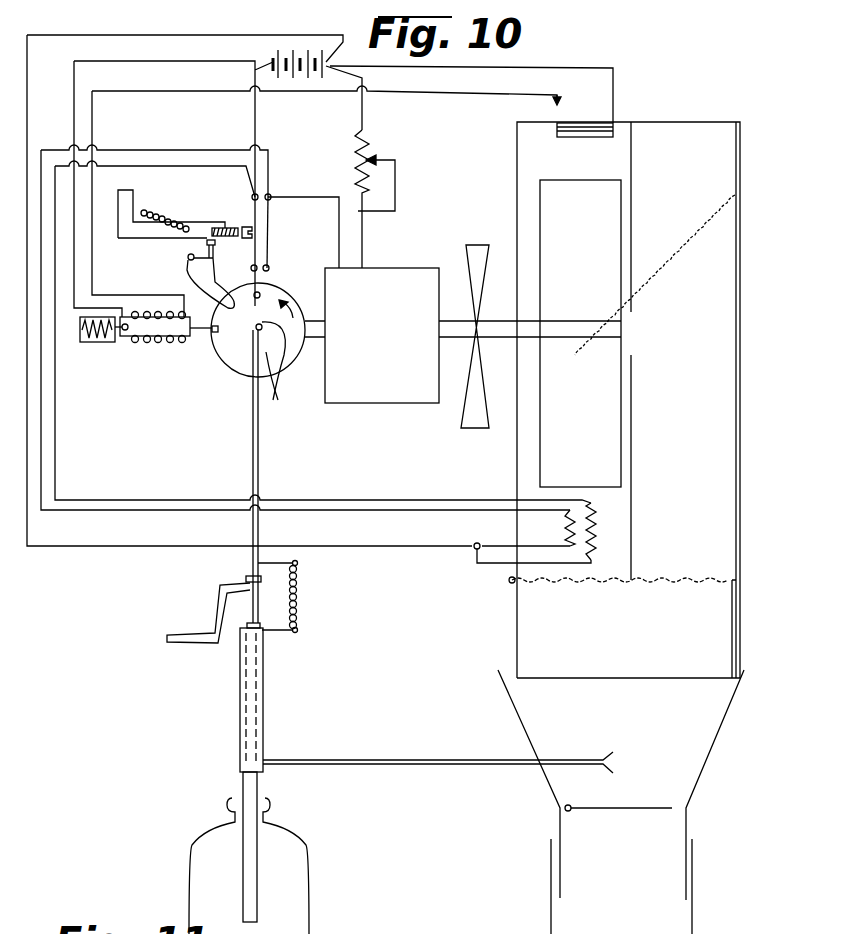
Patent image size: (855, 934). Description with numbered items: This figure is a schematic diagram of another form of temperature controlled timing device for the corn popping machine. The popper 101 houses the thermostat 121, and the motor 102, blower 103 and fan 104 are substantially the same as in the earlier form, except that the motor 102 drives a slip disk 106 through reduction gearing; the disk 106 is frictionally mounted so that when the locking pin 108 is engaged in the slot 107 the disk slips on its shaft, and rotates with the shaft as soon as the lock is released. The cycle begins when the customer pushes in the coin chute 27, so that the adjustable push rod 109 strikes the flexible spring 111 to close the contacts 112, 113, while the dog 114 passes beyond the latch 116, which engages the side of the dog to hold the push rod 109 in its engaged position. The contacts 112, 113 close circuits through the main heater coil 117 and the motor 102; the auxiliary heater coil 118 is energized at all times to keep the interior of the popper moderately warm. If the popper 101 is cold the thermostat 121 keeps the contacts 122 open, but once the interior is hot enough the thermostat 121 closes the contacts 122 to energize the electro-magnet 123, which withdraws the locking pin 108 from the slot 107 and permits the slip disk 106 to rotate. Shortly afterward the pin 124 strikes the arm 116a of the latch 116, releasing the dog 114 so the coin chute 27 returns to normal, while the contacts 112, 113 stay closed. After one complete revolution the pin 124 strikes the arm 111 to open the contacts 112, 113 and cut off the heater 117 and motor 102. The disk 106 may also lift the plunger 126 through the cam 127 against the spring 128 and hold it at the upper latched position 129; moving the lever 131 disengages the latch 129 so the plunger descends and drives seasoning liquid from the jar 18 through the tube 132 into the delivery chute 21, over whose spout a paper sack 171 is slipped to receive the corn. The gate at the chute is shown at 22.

The jar 18 is at (310, 866).
The delivery chute 21 is at (695, 752).
The shutter plate 22 is at (655, 805).
The coin chute 27 is at (125, 210).
The popper 101 is at (688, 395).
The motor 102 is at (382, 335).
The blower 103 is at (580, 333).
The fan 104 is at (471, 318).
The slip disk 106 is at (282, 362).
The slot 107 is at (200, 330).
The locking pin 108 is at (170, 343).
The adjustable push rod 109 is at (228, 226).
The flexible spring 111 is at (270, 230).
The contact 112 is at (257, 265).
The contact 113 is at (268, 266).
The dog 114 is at (214, 248).
The latch 116 is at (188, 254).
The arm of latch 116a is at (197, 283).
The main heater coil 117 is at (598, 532).
The auxiliary heater coil 118 is at (575, 510).
The thermostat 121 is at (588, 125).
The contacts 122 is at (562, 114).
The electro-magnet 123 is at (133, 340).
The pin 124 is at (260, 294).
The plunger 126 is at (262, 475).
The cam 127 is at (268, 402).
The spring 128 is at (300, 598).
The latch 129 is at (248, 578).
The lever 131 is at (182, 642).
The tube 132 is at (400, 760).
The paper sack 171 is at (693, 890).